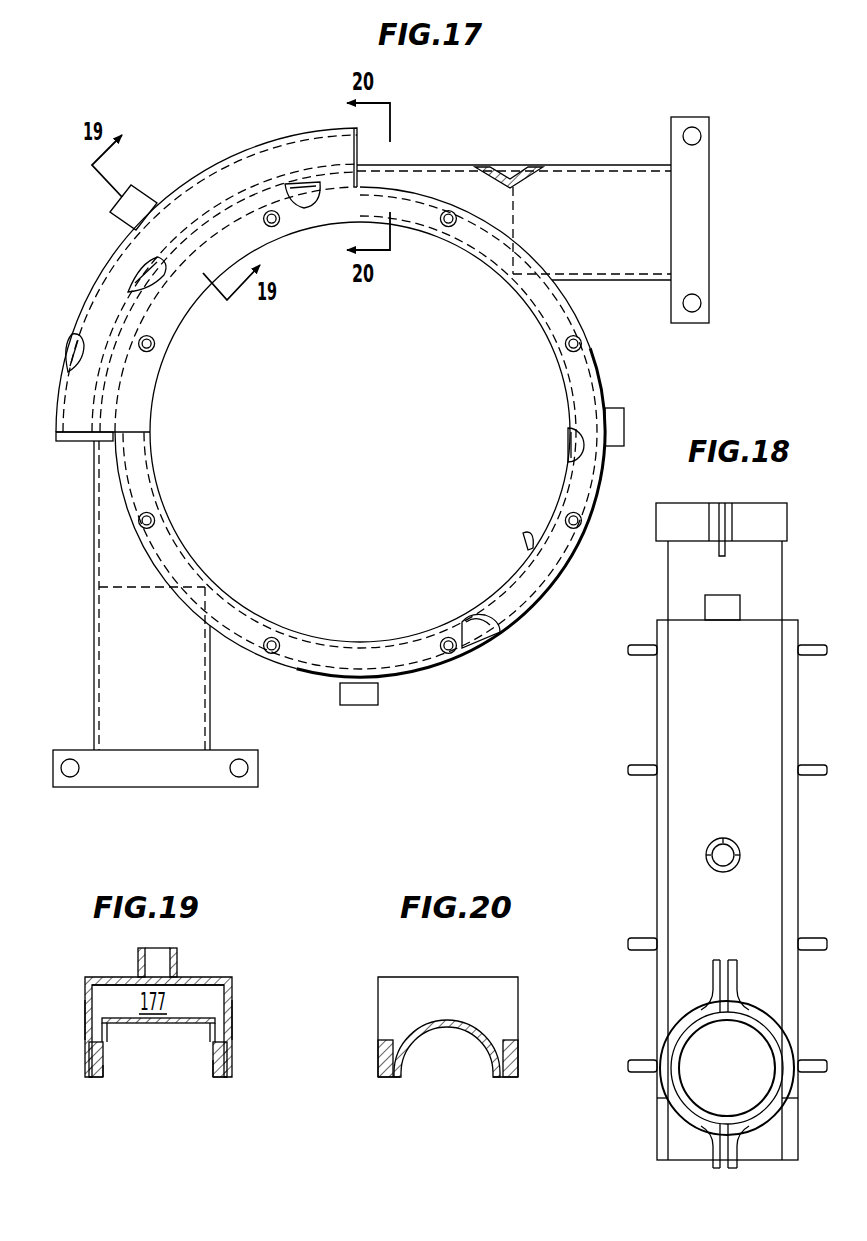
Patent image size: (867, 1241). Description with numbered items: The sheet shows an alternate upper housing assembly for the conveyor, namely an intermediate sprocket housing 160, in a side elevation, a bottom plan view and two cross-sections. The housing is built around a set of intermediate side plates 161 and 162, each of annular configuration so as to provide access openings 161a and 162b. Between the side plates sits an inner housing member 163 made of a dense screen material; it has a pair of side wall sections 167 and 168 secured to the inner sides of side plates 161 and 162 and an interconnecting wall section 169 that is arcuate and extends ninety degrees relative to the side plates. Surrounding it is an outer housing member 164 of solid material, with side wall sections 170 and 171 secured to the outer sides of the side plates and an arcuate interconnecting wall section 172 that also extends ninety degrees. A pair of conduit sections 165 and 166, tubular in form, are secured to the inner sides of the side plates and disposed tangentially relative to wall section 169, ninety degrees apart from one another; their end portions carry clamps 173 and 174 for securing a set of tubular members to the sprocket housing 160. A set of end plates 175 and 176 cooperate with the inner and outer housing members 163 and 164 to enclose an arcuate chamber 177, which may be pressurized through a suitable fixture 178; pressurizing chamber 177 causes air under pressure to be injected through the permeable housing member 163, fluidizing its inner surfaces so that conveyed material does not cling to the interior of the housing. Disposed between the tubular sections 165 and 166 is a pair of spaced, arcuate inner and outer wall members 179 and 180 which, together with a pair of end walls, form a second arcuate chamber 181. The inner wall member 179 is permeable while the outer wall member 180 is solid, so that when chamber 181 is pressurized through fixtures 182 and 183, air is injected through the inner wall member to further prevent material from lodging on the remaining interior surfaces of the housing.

In FIG. 17, the intermediate sprocket housing 160 is at (567, 73).
In FIG. 17, the intermediate side plate 161 is at (308, 204).
In FIG. 19, the intermediate side plate 161 is at (90, 1056).
In FIG. 20, the intermediate side plate 161 is at (382, 1060).
In FIG. 17, the access opening 161a is at (546, 556).
In FIG. 19, the access opening 161a is at (99, 1080).
In FIG. 19, the intermediate side plate 162 is at (226, 1058).
In FIG. 20, the intermediate side plate 162 is at (518, 1066).
In FIG. 19, the access opening 162b is at (223, 1078).
In FIG. 19, the inner housing member 163 is at (172, 1026).
In FIG. 19, the outer housing member 164 is at (213, 976).
In FIG. 17, the conduit section 165 is at (92, 665).
In FIG. 18, the conduit section 165 is at (780, 1052).
In FIG. 17, the conduit section 166 is at (600, 164).
In FIG. 18, the conduit section 166 is at (783, 598).
In FIG. 20, the conduit section 166 is at (466, 1034).
In FIG. 19, the side wall section 167 is at (107, 1070).
In FIG. 19, the side wall section 168 is at (212, 1062).
In FIG. 19, the interconnecting wall section 169 is at (133, 1025).
In FIG. 19, the side wall section 170 is at (85, 1006).
In FIG. 19, the side wall section 171 is at (232, 1006).
In FIG. 19, the interconnecting wall section 172 is at (107, 976).
In FIG. 17, the clamp 173 is at (258, 766).
In FIG. 18, the clamp 173 is at (780, 1100).
In FIG. 17, the clamp 174 is at (710, 150).
In FIG. 18, the clamp 174 is at (790, 528).
In FIG. 17, the end plate 175 is at (72, 441).
In FIG. 18, the end plate 175 is at (768, 1160).
In FIG. 17, the end plate 176 is at (360, 160).
In FIG. 20, the end plate 176 is at (506, 1012).
In FIG. 17, the arcuate chamber 177 is at (72, 352).
In FIG. 17, the fixture 178 is at (130, 186).
In FIG. 17, the inner wall member 179 is at (468, 614).
In FIG. 17, the outer wall member 180 is at (472, 662).
In FIG. 18, the outer wall member 180 is at (773, 834).
In FIG. 17, the arcuate chamber 181 is at (568, 446).
In FIG. 17, the fixture 182 is at (362, 705).
In FIG. 18, the fixture 182 is at (722, 874).
In FIG. 17, the fixture 183 is at (622, 442).
In FIG. 18, the fixture 183 is at (740, 609).